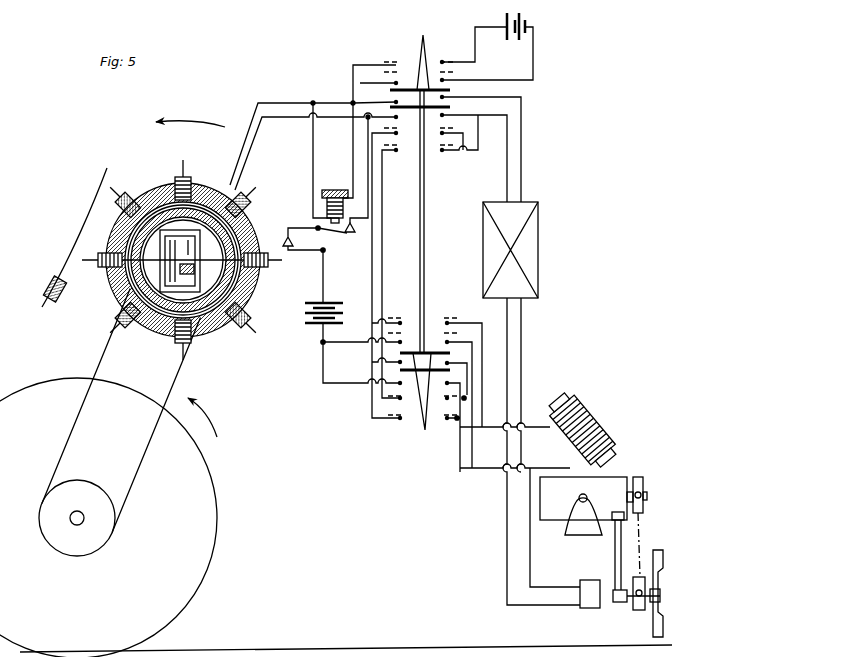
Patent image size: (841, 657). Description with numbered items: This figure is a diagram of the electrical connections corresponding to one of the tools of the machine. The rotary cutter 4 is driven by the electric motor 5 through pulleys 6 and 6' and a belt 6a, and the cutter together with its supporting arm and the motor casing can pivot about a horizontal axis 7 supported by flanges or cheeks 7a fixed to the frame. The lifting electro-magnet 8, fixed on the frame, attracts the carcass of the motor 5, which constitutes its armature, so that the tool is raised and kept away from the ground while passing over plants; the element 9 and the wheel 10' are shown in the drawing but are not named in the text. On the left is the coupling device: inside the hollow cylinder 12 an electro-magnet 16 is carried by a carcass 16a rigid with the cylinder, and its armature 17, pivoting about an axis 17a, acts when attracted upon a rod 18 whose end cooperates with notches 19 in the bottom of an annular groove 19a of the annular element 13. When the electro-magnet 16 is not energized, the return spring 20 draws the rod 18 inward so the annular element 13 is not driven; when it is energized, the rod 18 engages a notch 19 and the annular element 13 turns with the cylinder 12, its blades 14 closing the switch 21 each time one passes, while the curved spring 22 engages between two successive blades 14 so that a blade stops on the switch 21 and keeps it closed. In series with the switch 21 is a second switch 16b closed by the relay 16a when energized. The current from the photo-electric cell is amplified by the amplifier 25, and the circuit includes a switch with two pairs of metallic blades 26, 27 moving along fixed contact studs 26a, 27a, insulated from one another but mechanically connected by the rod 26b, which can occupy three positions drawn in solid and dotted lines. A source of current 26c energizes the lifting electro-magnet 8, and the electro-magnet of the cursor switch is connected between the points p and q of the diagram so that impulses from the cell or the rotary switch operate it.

The rotary cutter 4 is at (661, 558).
The electric motor 5 is at (614, 480).
The pulley 6 is at (655, 485).
The belt 6a is at (646, 540).
The pulley 6' is at (661, 590).
The horizontal axis 7 is at (578, 502).
The flange 7a is at (581, 528).
The electro-magnet 8 is at (593, 404).
The terminal box 9 is at (586, 608).
The drum 10' is at (108, 473).
The hollow cylinder 12 is at (184, 196).
The annular element 13 is at (232, 194).
The blade 14 is at (118, 193).
The electro-magnet 16 is at (205, 330).
The carcass 16a is at (254, 234).
The second switch 16b is at (340, 236).
The armature 17 is at (110, 292).
The axis 17a is at (110, 246).
The rod 18 is at (236, 270).
The notch 19 is at (240, 226).
The annular groove 19a is at (160, 330).
The return spring 20 is at (172, 276).
The switch 21 is at (304, 254).
The spring 22 is at (96, 226).
The amplifier 25 is at (540, 258).
The metallic blades 26 is at (424, 44).
The contact studs 26a is at (528, 22).
The rod 26b is at (425, 192).
The source of current 26c is at (322, 343).
The metallic blades 27 is at (424, 432).
The contact studs 27a is at (400, 342).
The point p is at (466, 396).
The point q is at (455, 420).